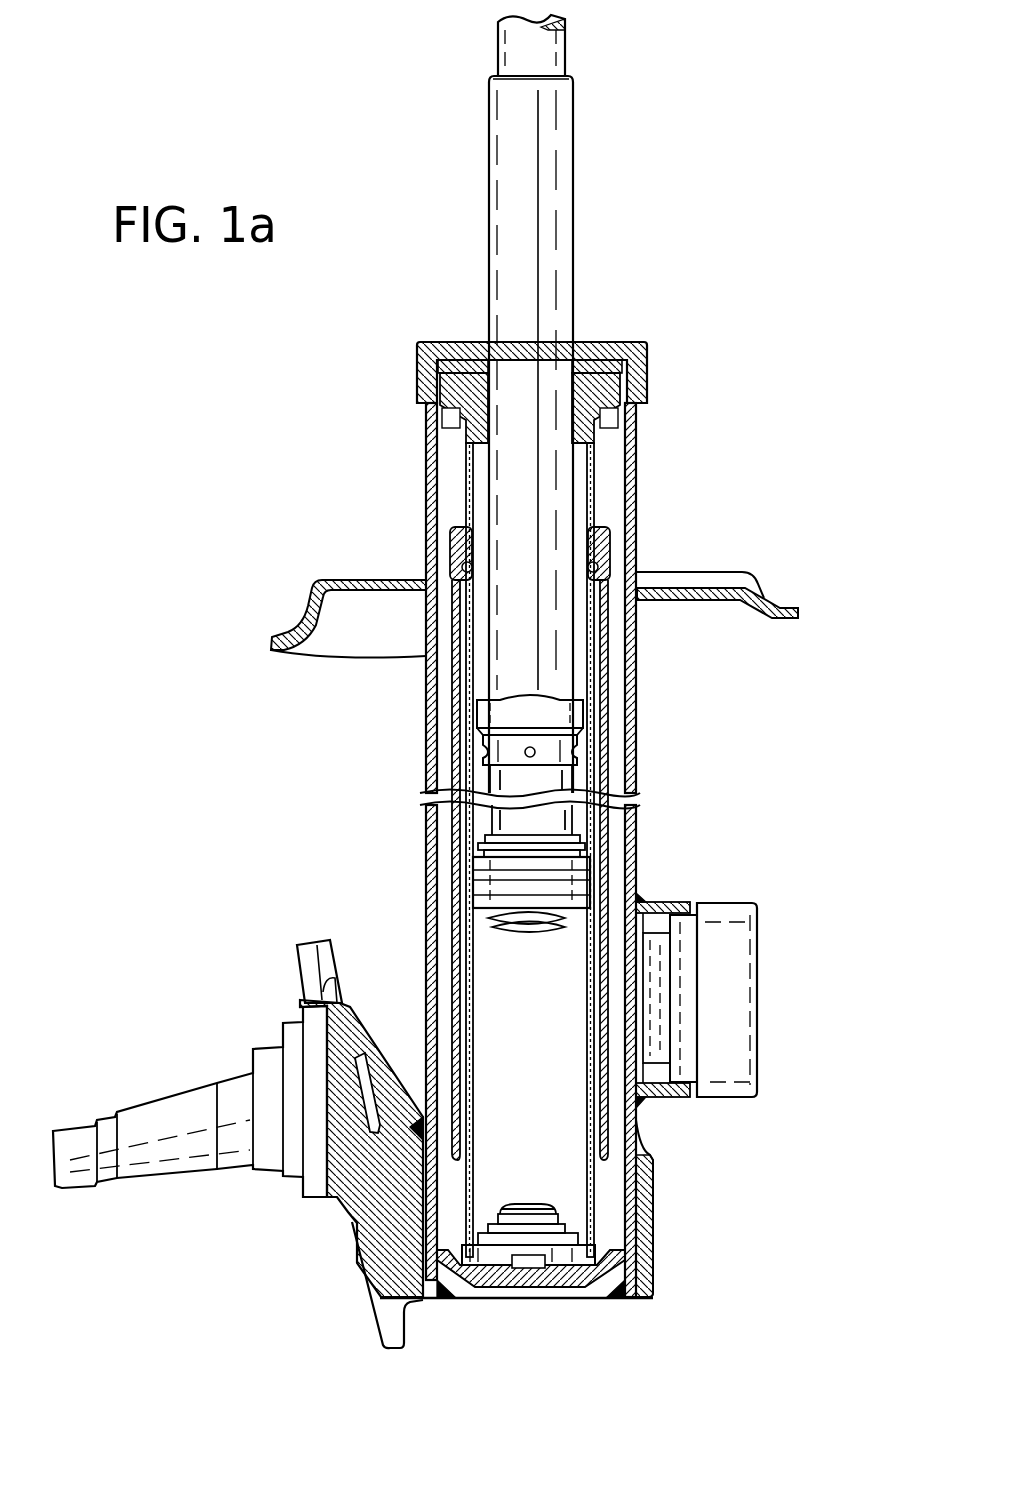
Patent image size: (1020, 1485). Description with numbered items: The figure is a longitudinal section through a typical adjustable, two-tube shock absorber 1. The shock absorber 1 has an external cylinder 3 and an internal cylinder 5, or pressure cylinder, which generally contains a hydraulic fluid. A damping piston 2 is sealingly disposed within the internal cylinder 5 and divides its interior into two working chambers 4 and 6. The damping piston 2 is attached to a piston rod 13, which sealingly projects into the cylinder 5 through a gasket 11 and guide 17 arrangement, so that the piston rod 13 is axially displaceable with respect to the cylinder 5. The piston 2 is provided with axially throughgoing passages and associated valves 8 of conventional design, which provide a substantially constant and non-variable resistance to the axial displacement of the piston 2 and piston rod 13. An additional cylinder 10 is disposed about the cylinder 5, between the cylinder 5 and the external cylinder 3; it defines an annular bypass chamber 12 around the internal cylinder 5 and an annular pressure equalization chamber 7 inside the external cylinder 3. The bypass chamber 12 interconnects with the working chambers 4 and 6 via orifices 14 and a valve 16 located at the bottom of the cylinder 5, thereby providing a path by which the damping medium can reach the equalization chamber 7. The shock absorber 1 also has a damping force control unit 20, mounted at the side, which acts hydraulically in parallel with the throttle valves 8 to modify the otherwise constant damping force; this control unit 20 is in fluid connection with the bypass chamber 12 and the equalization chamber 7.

The shock absorber 1 is at (190, 437).
The damping piston 2 is at (573, 880).
The external cylinder 3 is at (430, 735).
The working chamber 4 is at (583, 665).
The internal cylinder 5 is at (598, 455).
The working chamber 6 is at (565, 1128).
The pressure equalization chamber 7 is at (453, 1232).
The valves 8 is at (537, 876).
The additional cylinder 10 is at (608, 712).
The gasket 11 is at (605, 342).
The bypass chamber 12 is at (597, 763).
The piston rod 13 is at (550, 291).
The orifices 14 is at (467, 565).
The valve 16 is at (535, 1252).
The guide 17 is at (625, 417).
The damping force control unit 20 is at (735, 1005).